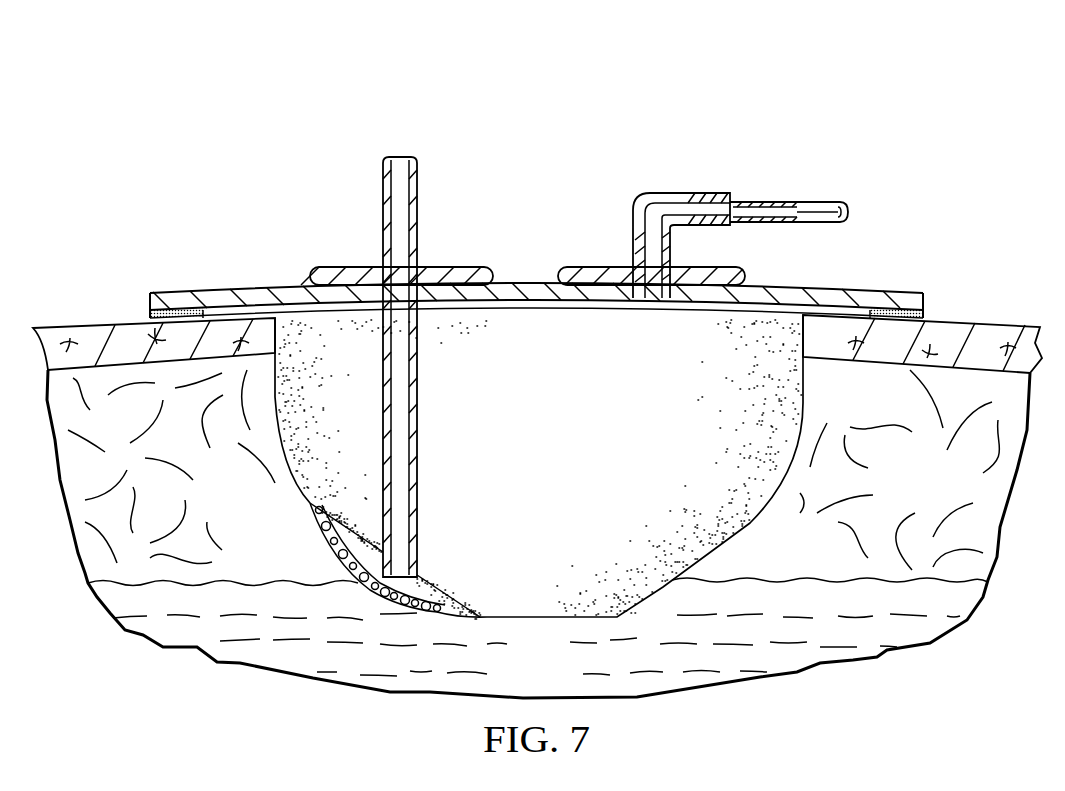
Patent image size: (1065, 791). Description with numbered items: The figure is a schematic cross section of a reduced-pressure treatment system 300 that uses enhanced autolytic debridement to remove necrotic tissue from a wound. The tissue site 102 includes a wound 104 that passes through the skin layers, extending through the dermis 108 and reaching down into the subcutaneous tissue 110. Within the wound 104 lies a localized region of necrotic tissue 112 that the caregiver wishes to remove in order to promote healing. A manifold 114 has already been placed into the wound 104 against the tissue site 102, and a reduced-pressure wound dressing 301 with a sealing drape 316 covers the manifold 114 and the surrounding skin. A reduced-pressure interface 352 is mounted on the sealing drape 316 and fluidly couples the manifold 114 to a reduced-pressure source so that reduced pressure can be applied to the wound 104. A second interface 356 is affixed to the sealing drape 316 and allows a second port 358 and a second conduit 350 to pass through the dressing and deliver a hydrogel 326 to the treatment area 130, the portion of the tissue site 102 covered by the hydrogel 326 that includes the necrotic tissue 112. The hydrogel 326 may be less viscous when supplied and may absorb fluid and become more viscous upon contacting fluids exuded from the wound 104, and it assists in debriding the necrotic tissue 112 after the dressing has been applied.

The system 300 is at (536, 295).
The reduced-pressure wound dressing 301 is at (285, 283).
The sealing drape 316 is at (242, 288).
The second conduit 350 is at (383, 179).
The second port 358 is at (421, 205).
The second interface 356 is at (336, 266).
The reduced-pressure interface 352 is at (583, 267).
The wound 104 is at (803, 383).
The dermis 108 is at (937, 485).
The manifold 114 is at (556, 456).
The tissue site 102 is at (751, 524).
The treatment area 130 is at (302, 517).
The necrotic tissue 112 is at (317, 538).
The hydrogel 326 is at (446, 590).
The subcutaneous tissue 110 is at (558, 671).